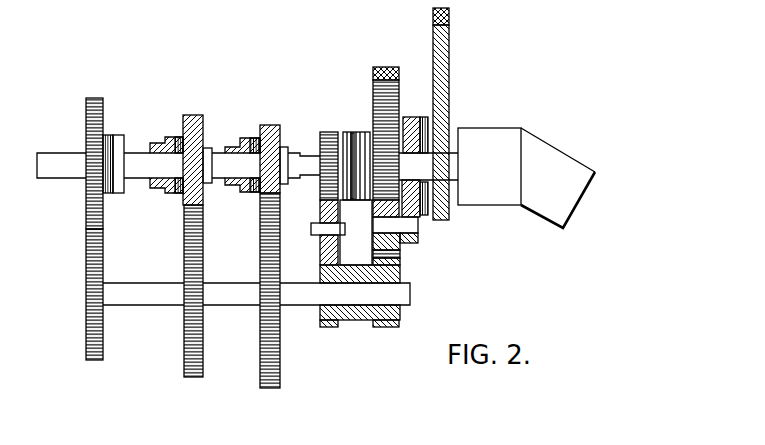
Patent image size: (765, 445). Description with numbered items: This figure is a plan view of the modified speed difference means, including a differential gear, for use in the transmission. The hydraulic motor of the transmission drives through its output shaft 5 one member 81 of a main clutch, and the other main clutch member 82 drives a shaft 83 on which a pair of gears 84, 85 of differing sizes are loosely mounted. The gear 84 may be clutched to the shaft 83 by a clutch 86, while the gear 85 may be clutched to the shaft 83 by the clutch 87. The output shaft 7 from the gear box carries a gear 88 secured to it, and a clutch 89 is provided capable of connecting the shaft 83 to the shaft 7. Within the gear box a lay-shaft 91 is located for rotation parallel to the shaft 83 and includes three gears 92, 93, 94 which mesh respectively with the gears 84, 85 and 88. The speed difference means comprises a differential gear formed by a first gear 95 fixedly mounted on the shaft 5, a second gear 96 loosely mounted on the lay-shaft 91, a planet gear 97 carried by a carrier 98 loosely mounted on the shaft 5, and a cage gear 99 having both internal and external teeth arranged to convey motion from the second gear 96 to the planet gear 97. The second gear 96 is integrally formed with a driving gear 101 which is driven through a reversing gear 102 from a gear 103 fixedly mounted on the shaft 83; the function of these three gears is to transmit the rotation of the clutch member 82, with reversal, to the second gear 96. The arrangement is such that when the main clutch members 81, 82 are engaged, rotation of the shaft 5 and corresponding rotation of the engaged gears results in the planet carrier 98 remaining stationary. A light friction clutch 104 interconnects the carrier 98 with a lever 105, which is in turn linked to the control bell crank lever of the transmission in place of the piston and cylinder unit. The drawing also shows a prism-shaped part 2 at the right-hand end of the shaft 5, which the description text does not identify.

The output shaft 7 is at (55, 168).
The gear 88 is at (104, 110).
The gear 94 is at (87, 321).
The clutch 89 is at (108, 135).
The clutch 87 is at (178, 142).
The gear 85 is at (202, 133).
The gear 93 is at (203, 335).
The clutch 86 is at (233, 146).
The gear 84 is at (273, 128).
The gear 92 is at (281, 346).
The shaft 83 is at (303, 160).
The gear 103 is at (333, 132).
The reversing gear 102 is at (321, 248).
The main clutch member 82 is at (350, 132).
The main clutch member 81 is at (365, 200).
The cage gear 99 is at (392, 67).
The first gear 95 is at (383, 140).
The planet gear 97 is at (396, 242).
The second gear 96 is at (399, 318).
The driving gear 101 is at (322, 327).
The lay-shaft 91 is at (136, 300).
The carrier 98 is at (415, 137).
The light friction clutch 104 is at (422, 212).
The lever 105 is at (449, 56).
The output shaft 5 is at (448, 163).
The prism 2 is at (502, 131).